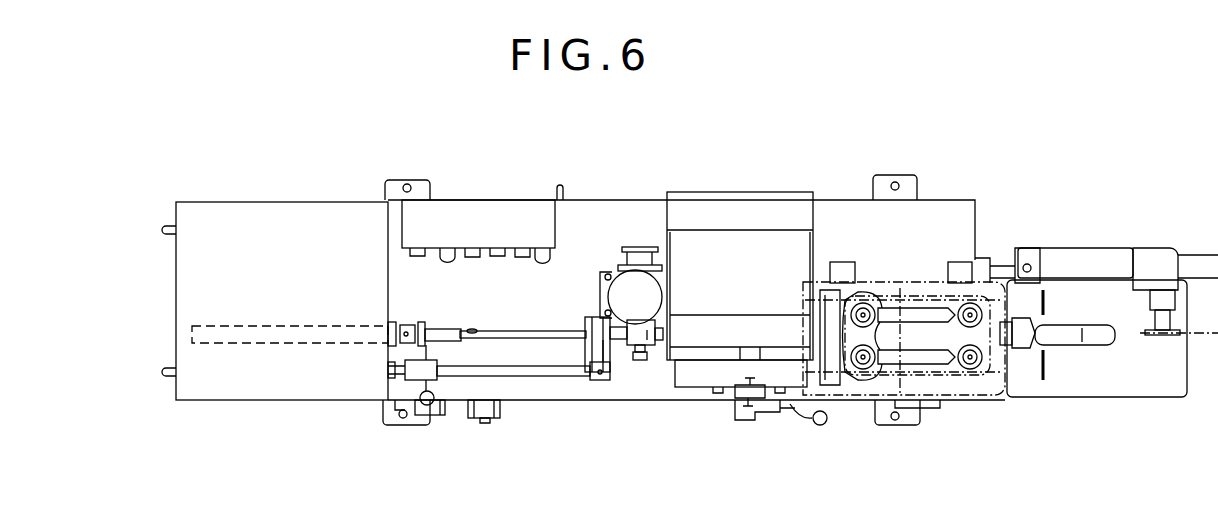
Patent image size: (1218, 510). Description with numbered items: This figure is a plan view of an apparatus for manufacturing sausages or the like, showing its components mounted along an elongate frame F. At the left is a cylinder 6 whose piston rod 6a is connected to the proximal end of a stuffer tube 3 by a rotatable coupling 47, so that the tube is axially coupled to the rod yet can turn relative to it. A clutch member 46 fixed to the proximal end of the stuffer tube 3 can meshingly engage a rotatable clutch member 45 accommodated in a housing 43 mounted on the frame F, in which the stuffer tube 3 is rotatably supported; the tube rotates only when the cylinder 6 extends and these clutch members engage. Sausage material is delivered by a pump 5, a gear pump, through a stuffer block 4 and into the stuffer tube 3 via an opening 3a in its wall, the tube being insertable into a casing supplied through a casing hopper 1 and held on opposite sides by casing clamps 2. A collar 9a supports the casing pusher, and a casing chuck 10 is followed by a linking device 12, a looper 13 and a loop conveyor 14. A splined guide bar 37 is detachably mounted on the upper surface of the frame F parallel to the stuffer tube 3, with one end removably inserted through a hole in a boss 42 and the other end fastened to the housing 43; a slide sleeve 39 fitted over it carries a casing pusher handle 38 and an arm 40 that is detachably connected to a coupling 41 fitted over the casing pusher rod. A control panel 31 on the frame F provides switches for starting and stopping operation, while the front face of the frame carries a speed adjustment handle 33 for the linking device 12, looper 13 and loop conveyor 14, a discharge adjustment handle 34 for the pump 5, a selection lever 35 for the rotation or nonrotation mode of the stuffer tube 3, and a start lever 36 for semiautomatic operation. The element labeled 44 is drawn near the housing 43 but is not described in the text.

The frame F is at (602, 200).
The casing hopper 1 is at (813, 230).
The casing clamps 2 is at (692, 382).
The stuffer tube 3 is at (519, 330).
The opening 3a is at (474, 329).
The stuffer block 4 is at (641, 322).
The pump 5 is at (620, 270).
The cylinder 6 is at (303, 326).
The piston rod 6a is at (392, 324).
The collar 9a is at (660, 345).
The casing chuck 10 is at (842, 385).
The linking device 12 is at (924, 276).
The looper 13 is at (1040, 318).
The loop conveyor 14 is at (1200, 335).
The control panel 31 is at (556, 231).
The speed adjustment handle 33 is at (446, 416).
The discharge adjustment handle 34 is at (492, 420).
The selection lever 35 is at (818, 426).
The start lever 36 is at (772, 420).
The guide bar 37 is at (548, 378).
The casing pusher handle 38 is at (424, 405).
The slide sleeve 39 is at (400, 392).
The arm 40 is at (437, 368).
The coupling 41 is at (442, 343).
The boss 42 is at (388, 378).
The housing 43 is at (600, 352).
The bracket 44 is at (600, 380).
The clutch member 45 is at (587, 325).
The clutch member 46 is at (425, 324).
The rotatable coupling 47 is at (411, 316).